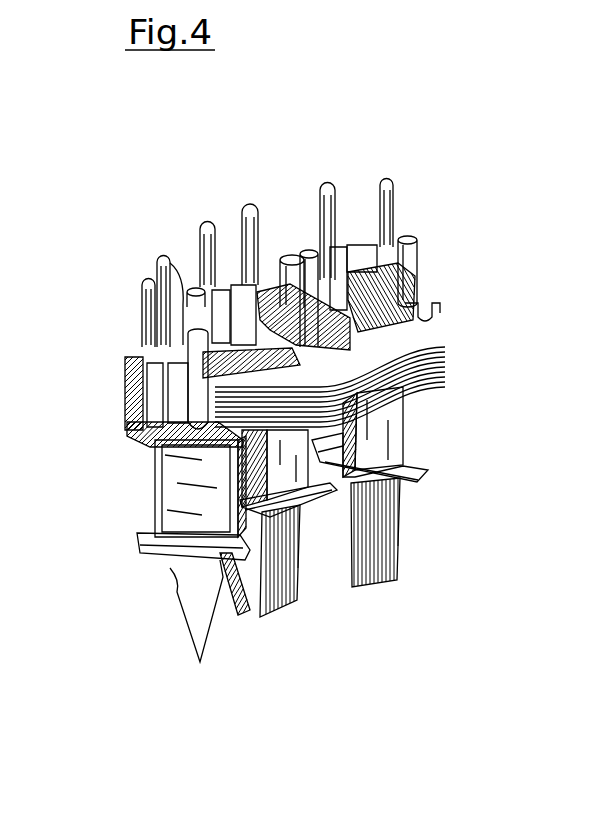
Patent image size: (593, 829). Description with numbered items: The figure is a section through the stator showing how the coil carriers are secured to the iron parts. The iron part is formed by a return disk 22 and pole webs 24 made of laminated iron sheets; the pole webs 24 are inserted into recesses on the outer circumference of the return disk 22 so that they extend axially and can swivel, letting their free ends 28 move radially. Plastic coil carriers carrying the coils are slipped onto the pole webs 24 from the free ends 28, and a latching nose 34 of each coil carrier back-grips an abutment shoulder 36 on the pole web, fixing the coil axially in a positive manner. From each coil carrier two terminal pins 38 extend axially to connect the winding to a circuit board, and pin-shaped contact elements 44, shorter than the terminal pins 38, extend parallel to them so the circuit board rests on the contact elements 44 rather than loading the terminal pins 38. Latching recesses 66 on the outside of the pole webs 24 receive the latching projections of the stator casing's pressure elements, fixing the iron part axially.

The return disk 22 is at (392, 342).
The pole webs 24 is at (403, 500).
The free ends 28 is at (213, 647).
The latching nose 34 is at (167, 258).
The abutment shoulder 36 is at (130, 392).
The terminal pins 38 is at (207, 222).
The contact elements 44 is at (402, 272).
The latching recesses 66 is at (173, 593).